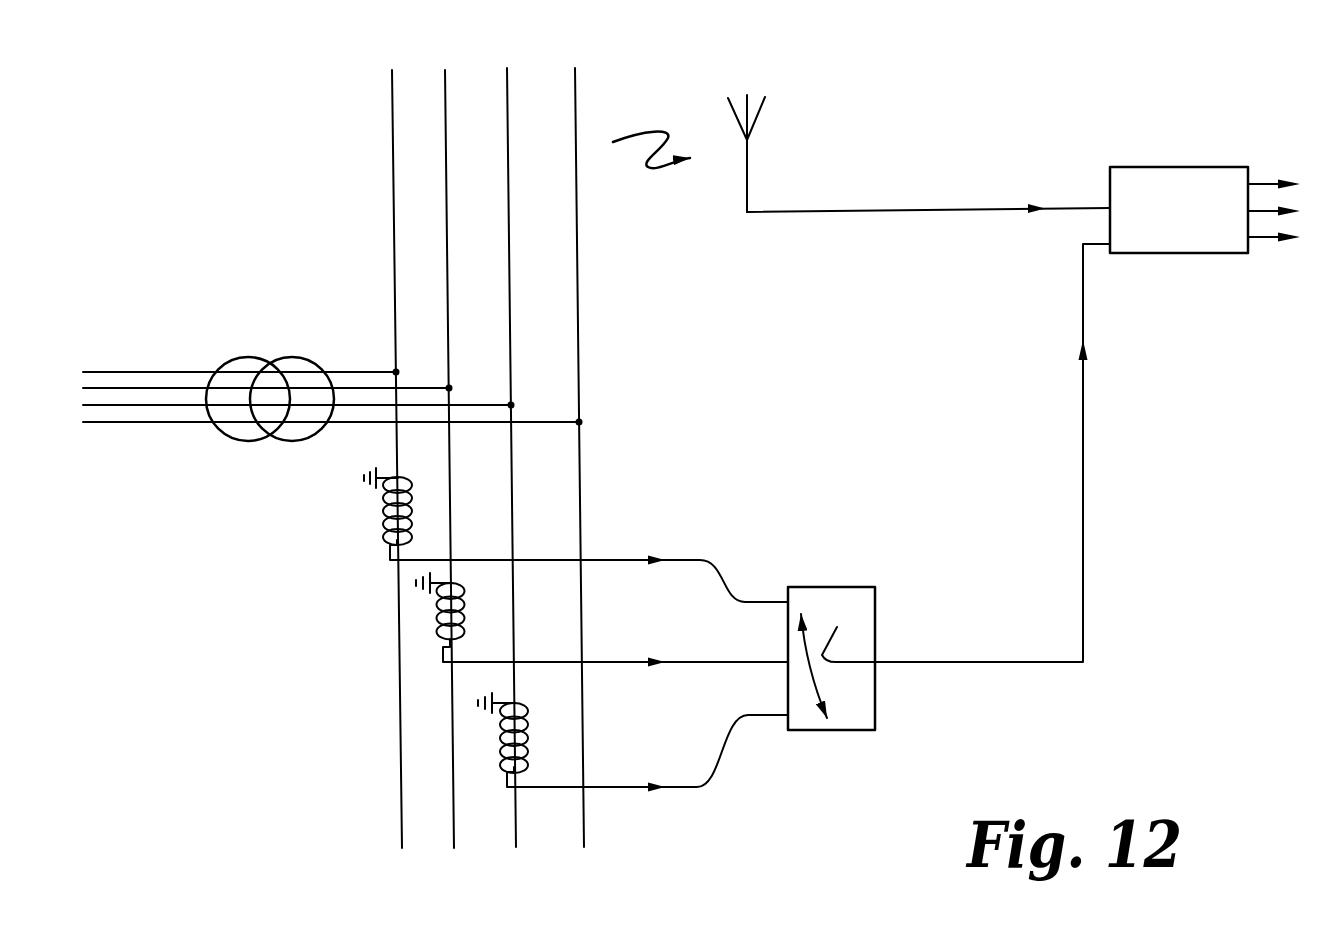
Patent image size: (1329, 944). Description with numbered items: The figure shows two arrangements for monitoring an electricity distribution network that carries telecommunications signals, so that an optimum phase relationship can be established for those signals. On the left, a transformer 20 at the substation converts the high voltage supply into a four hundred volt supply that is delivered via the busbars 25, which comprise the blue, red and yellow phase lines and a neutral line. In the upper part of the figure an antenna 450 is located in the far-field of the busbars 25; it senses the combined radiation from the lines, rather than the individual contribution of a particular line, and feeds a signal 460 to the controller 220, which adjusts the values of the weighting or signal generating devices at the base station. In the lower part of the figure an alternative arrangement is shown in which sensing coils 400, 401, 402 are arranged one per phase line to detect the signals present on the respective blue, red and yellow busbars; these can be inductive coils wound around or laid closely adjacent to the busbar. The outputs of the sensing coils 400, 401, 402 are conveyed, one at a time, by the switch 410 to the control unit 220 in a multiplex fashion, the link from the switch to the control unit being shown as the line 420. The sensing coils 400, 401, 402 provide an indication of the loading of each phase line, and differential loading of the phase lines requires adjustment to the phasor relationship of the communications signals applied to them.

The transformer 20 is at (240, 425).
The busbars 25 is at (378, 838).
The controller 220 is at (1137, 223).
The sensing coil 400 is at (548, 535).
The sensing coil 401 is at (438, 630).
The sensing coil 402 is at (500, 740).
The switch 410 is at (857, 707).
The output line to processing unit 420 is at (1012, 453).
The antenna 450 is at (750, 139).
The signal 460 is at (1012, 207).